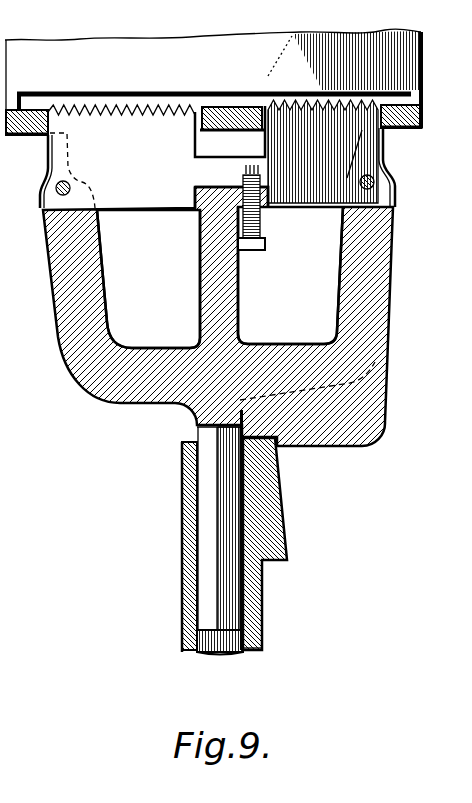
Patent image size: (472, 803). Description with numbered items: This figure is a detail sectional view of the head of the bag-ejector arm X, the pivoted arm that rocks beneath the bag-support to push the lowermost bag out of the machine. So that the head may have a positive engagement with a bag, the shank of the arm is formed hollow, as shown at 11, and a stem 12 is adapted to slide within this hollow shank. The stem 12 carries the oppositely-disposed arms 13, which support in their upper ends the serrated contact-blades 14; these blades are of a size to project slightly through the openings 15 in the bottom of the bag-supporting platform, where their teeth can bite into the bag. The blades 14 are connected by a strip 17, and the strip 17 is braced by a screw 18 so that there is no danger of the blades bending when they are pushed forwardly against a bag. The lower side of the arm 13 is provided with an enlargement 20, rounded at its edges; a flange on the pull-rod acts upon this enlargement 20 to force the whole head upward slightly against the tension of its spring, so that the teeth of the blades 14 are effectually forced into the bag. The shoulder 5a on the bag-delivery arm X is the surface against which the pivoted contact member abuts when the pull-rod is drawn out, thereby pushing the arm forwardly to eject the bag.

The openings 15 is at (250, 108).
The serrated contact-blades 14 is at (214, 154).
The strip 17 is at (231, 184).
The screw 18 is at (258, 232).
The arms 13 is at (103, 282).
The enlargement 20 is at (340, 437).
The shoulder 5a is at (282, 505).
The stem 12 is at (203, 520).
The hollow shank 11 is at (228, 642).
The bag-ejector arm X is at (257, 643).